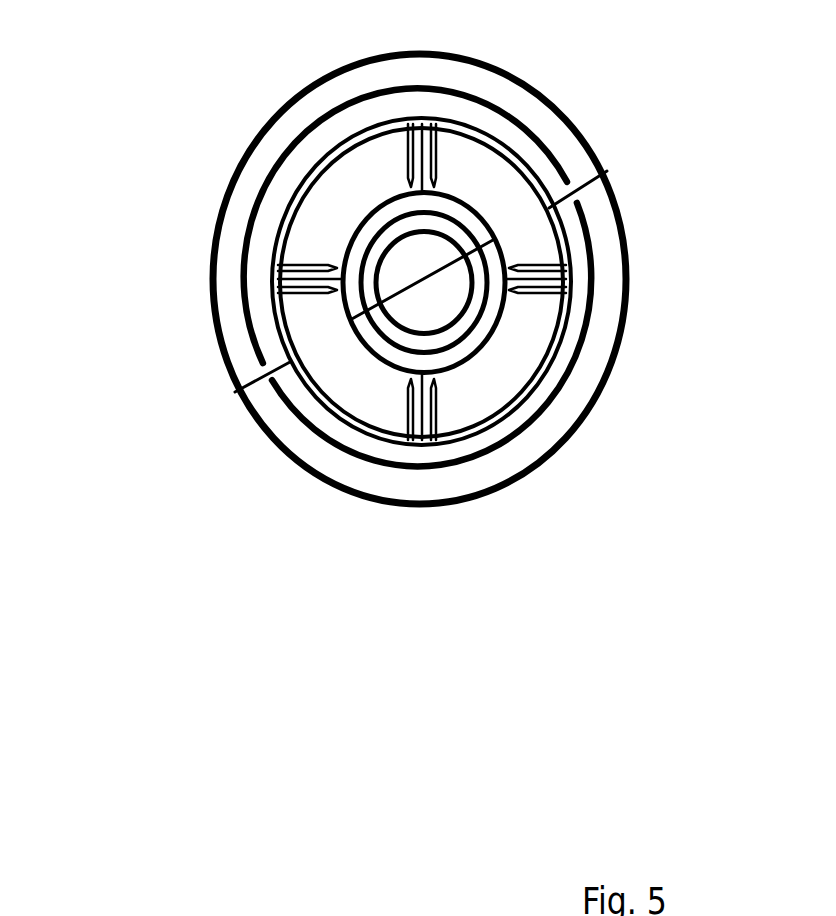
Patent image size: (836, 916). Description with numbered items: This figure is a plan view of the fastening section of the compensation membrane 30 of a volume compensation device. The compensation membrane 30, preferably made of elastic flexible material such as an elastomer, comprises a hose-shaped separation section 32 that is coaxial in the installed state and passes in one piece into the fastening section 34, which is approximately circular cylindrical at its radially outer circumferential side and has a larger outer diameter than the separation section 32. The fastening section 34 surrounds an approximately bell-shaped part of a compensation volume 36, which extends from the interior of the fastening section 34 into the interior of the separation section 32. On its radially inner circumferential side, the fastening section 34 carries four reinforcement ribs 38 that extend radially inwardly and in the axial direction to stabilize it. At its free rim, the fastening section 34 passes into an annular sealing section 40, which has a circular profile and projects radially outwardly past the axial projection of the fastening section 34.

The compensation membrane 30 is at (119, 73).
The separation section 32 is at (452, 298).
The fastening section 34 is at (358, 402).
The compensation volume 36 is at (338, 227).
The reinforcement ribs 38 is at (535, 268).
The sealing section 40 is at (614, 226).